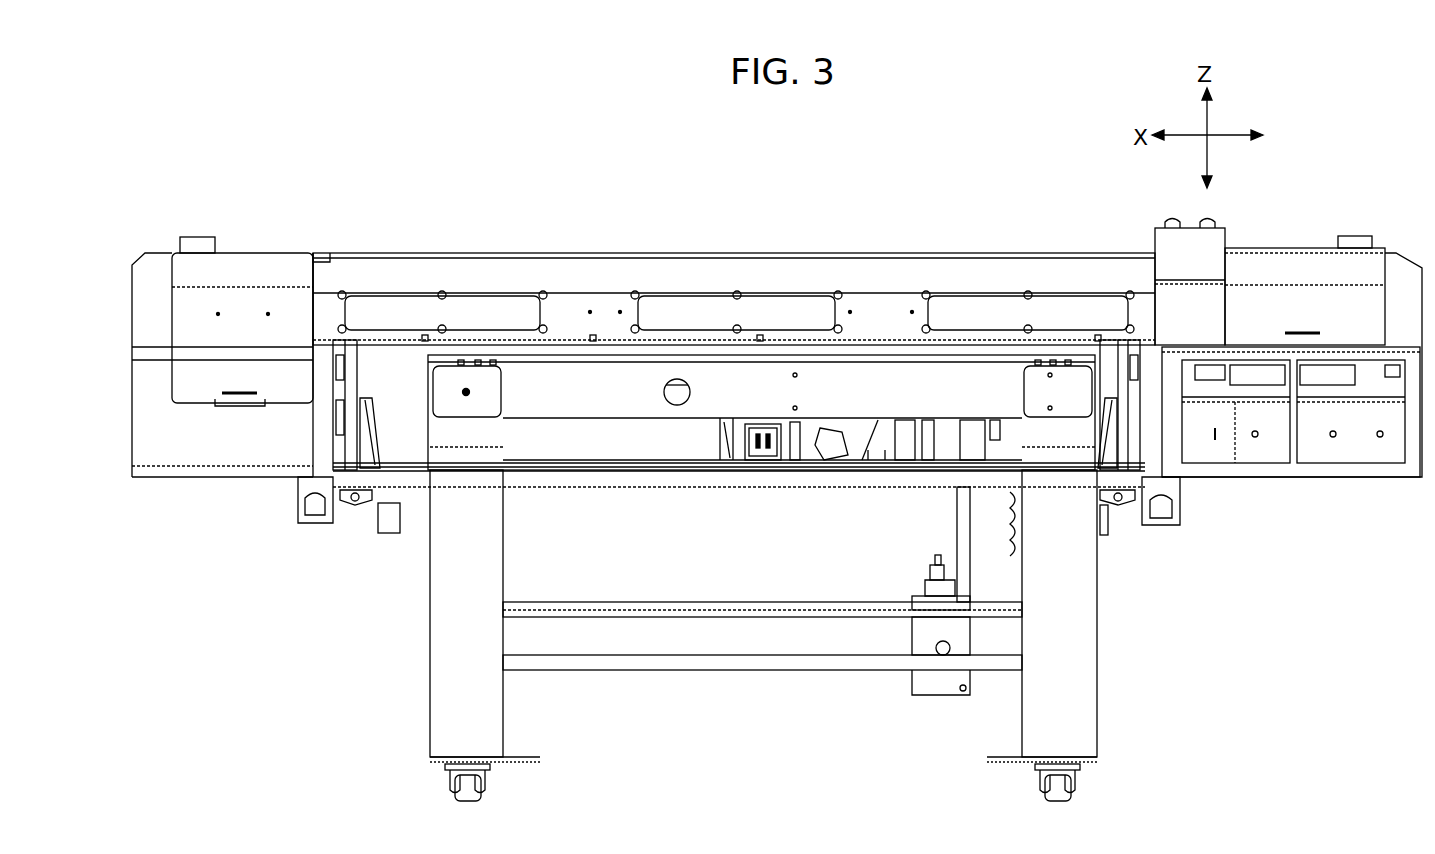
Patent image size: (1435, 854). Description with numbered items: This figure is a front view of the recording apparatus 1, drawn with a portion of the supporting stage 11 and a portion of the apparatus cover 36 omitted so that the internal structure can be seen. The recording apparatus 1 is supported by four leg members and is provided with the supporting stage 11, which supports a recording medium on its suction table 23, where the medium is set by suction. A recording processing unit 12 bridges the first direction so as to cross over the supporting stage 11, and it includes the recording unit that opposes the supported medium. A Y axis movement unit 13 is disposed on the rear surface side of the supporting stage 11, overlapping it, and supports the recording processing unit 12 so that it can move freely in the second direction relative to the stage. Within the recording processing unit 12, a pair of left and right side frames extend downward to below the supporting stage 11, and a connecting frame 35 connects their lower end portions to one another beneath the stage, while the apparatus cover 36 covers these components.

The recording apparatus 1 is at (1358, 156).
The supporting stage 11 is at (812, 338).
The recording processing unit 12 is at (1358, 220).
The Y axis movement unit 13 is at (758, 480).
The suction table 23 is at (890, 355).
The connecting frame 35 is at (632, 490).
The apparatus cover 36 is at (148, 265).